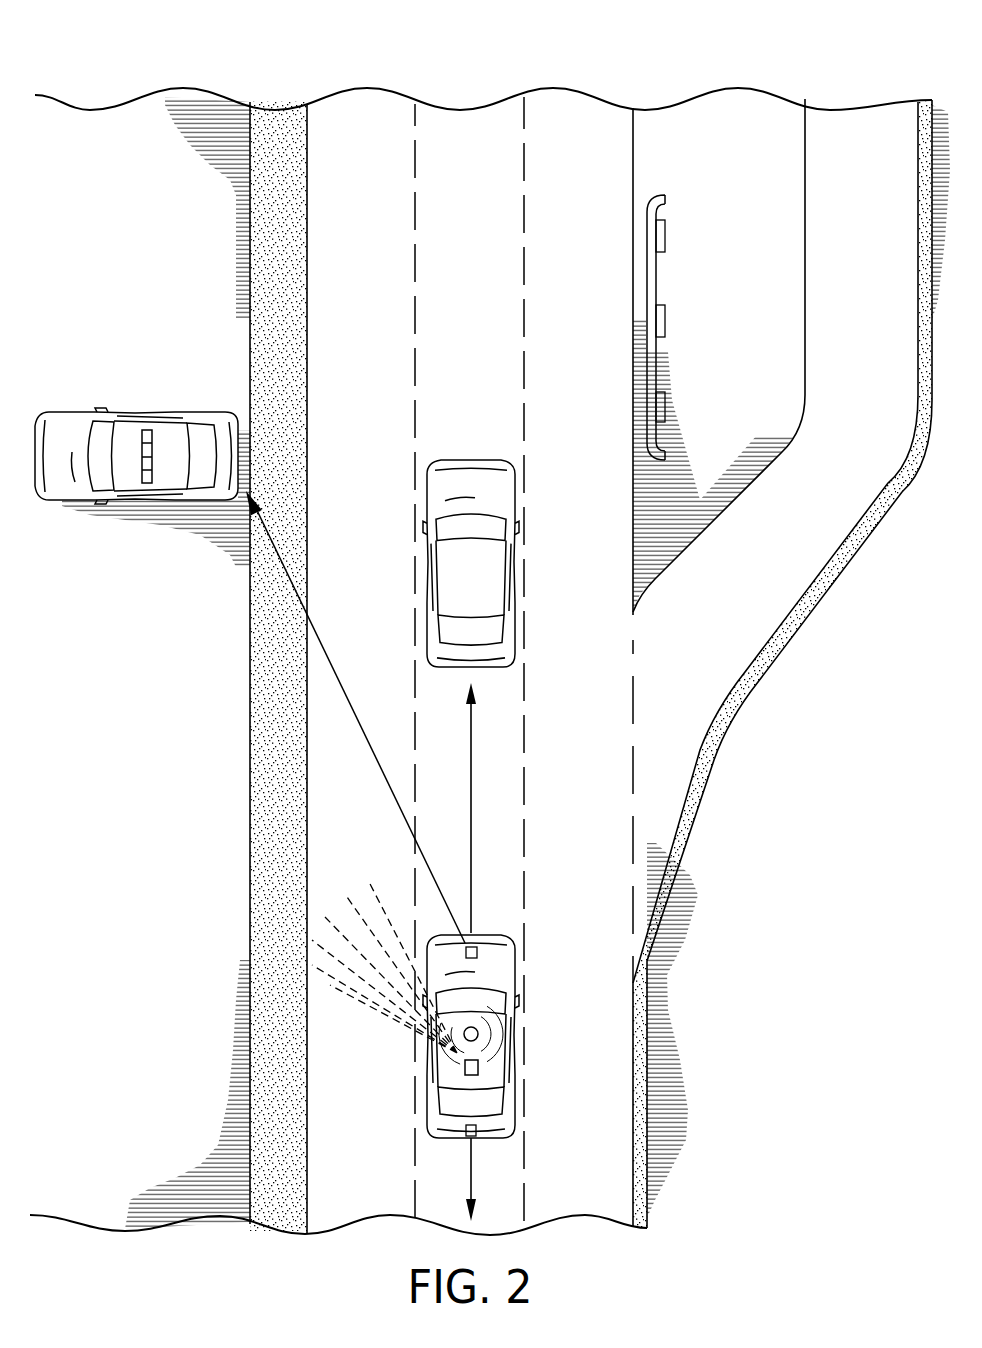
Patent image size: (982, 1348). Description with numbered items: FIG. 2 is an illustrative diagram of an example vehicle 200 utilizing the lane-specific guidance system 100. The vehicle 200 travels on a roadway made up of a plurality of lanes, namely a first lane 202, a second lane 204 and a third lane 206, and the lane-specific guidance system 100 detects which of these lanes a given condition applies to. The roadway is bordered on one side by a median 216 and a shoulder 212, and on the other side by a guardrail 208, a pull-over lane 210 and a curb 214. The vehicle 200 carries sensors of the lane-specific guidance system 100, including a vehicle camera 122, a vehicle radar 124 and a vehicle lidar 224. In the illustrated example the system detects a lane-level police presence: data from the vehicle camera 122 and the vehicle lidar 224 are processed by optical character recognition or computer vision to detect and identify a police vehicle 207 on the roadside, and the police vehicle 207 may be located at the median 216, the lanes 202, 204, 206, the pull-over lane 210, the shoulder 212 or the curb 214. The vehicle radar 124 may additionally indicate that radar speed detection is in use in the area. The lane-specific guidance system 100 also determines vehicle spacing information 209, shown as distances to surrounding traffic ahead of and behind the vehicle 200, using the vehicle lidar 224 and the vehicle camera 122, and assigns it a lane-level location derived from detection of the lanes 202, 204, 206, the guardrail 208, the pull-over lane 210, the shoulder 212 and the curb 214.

The lane-specific guidance system 100 is at (535, 937).
The vehicle camera 122 is at (478, 952).
The vehicle radar 124 is at (478, 1032).
The vehicle 200 is at (438, 933).
The first lane 202 is at (365, 118).
The second lane 204 is at (472, 118).
The third lane 206 is at (583, 118).
The police vehicle 207 is at (126, 412).
The guardrail 208 is at (653, 284).
The vehicle spacing information 209 is at (472, 786).
The pull-over lane 210 is at (863, 140).
The shoulder 212 is at (273, 125).
The curb 214 is at (648, 1057).
The median 216 is at (205, 120).
The vehicle lidar 224 is at (465, 1072).